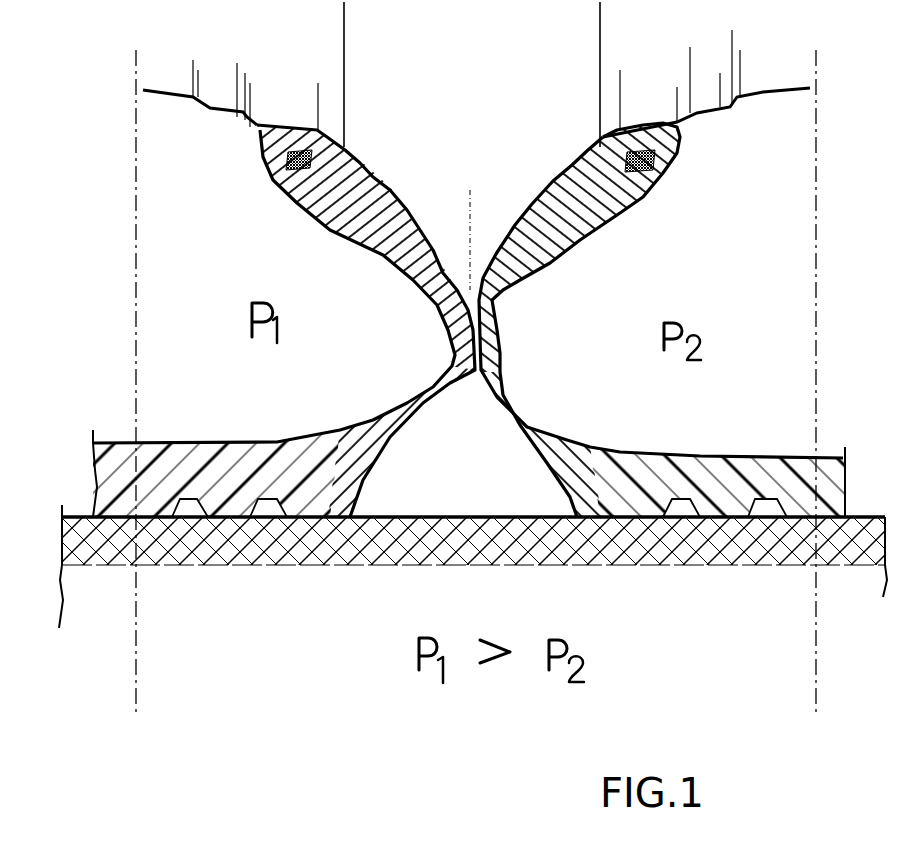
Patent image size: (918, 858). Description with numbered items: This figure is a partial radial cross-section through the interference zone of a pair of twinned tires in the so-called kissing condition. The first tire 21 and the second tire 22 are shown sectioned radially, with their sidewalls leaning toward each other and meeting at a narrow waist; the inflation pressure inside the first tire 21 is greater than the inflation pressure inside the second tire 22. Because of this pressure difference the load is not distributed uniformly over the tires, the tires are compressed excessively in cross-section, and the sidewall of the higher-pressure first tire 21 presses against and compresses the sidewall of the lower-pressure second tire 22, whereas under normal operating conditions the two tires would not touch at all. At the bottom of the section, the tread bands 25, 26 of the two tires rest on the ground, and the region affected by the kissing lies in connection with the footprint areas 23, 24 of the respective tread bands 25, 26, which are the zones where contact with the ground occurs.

The first tire 21 is at (360, 166).
The second tire 22 is at (563, 188).
The footprint area 23 is at (317, 518).
The footprint area 24 is at (607, 518).
The tread band 25 is at (230, 475).
The tread band 26 is at (730, 487).